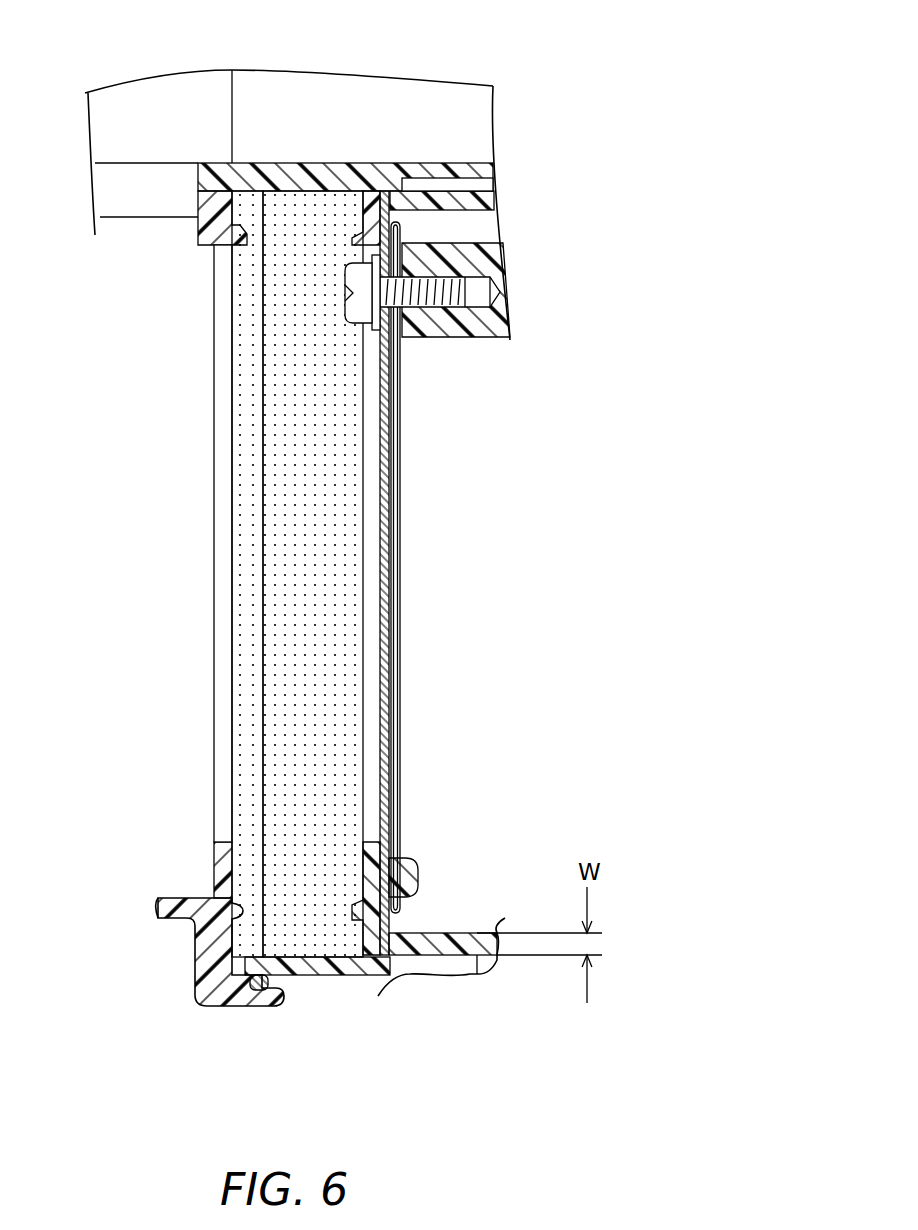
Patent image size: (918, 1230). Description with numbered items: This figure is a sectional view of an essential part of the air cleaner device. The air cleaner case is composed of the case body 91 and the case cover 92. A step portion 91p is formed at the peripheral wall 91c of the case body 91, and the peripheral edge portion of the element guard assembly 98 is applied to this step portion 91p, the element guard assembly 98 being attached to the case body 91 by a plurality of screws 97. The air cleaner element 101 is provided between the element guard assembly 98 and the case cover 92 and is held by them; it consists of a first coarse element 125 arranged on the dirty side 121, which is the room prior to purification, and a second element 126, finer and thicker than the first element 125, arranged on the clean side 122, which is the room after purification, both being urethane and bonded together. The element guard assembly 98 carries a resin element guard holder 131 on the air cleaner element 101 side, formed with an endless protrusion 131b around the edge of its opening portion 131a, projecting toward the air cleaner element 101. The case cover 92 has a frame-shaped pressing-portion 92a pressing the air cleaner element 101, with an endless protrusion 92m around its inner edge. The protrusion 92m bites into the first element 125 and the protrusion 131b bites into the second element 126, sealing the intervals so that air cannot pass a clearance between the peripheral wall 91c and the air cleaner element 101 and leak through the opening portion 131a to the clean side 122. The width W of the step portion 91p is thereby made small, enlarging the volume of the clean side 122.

The case body 91 is at (363, 160).
The peripheral wall 91c is at (270, 170).
The step portion 91p is at (355, 940).
The case cover 92 is at (177, 186).
The frame-shaped pressing-portion 92a is at (222, 875).
The protrusion 92m is at (217, 988).
The screw 97 is at (362, 318).
The element guard assembly 98 is at (402, 657).
The air cleaner element 101 is at (232, 547).
The dirty side 121 is at (182, 423).
The clean side 122 is at (407, 457).
The first element 125 is at (252, 653).
The second element 126 is at (353, 732).
The element guard holder 131 is at (341, 975).
The opening portion 131a is at (372, 852).
The protrusion 131b is at (352, 910).